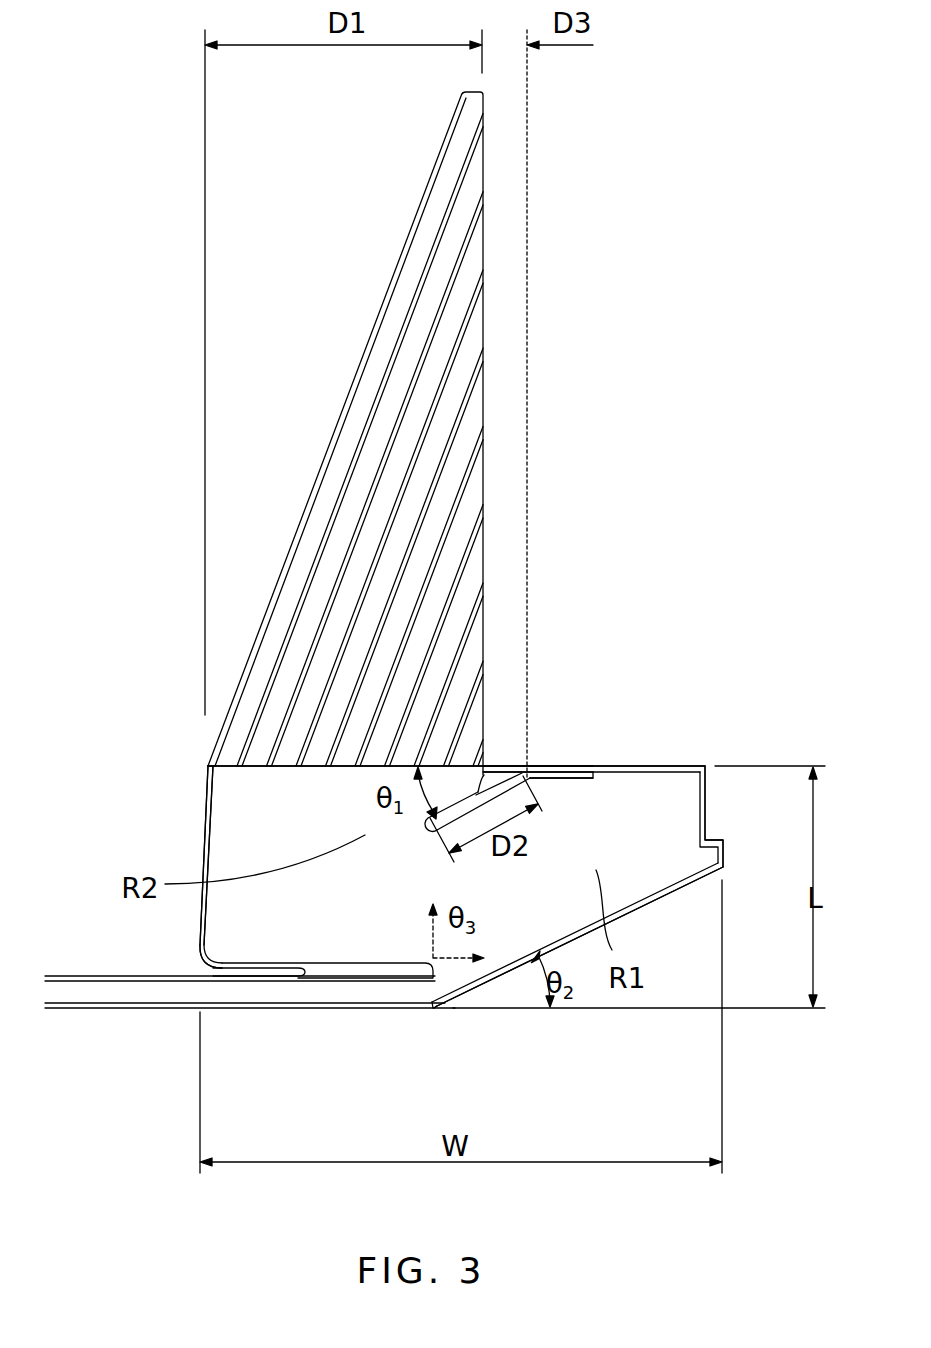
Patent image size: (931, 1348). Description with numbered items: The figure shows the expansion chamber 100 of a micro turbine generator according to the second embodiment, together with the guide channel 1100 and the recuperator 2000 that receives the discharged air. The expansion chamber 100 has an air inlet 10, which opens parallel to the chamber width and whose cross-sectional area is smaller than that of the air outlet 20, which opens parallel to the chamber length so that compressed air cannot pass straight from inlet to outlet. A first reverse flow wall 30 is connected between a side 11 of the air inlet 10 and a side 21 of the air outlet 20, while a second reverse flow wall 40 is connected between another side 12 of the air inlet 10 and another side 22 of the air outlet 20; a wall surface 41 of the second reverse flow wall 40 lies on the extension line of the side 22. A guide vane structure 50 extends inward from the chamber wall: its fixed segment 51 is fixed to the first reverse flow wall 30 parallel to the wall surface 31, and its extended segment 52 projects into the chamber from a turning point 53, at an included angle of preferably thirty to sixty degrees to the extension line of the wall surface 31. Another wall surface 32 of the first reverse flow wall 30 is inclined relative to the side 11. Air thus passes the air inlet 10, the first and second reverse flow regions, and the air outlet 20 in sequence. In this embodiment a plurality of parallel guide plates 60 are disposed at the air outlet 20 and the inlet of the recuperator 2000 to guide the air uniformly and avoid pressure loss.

The air inlet 10 is at (452, 992).
The side of the air inlet 11 is at (433, 1010).
The another side of the air inlet 12 is at (430, 982).
The air outlet 20 is at (395, 765).
The side of the air outlet 21 is at (480, 790).
The another side of the air outlet 22 is at (207, 764).
The first reverse flow wall 30 is at (708, 818).
The wall surface 31 is at (688, 766).
The wall surface 32 is at (658, 902).
The second reverse flow wall 40 is at (245, 970).
The wall surface 41 is at (205, 787).
The guide vane structure 50 is at (670, 648).
The fixed segment 51 is at (575, 778).
The extended segment 52 is at (537, 766).
The turning point 53 is at (568, 773).
The guide plates 60 is at (380, 380).
The expansion chamber 100 is at (186, 837).
The guide channel 1100 is at (298, 992).
The recuperator 2000 is at (483, 325).